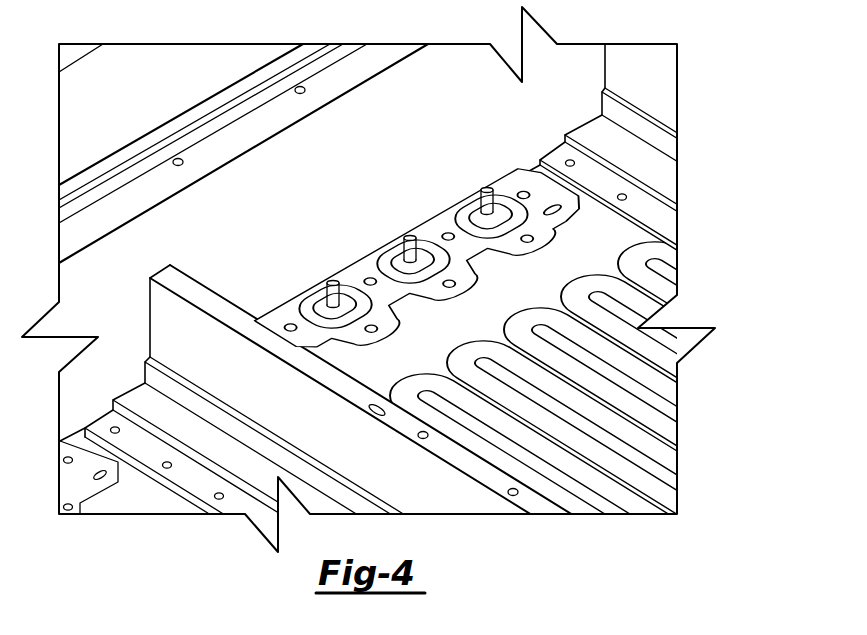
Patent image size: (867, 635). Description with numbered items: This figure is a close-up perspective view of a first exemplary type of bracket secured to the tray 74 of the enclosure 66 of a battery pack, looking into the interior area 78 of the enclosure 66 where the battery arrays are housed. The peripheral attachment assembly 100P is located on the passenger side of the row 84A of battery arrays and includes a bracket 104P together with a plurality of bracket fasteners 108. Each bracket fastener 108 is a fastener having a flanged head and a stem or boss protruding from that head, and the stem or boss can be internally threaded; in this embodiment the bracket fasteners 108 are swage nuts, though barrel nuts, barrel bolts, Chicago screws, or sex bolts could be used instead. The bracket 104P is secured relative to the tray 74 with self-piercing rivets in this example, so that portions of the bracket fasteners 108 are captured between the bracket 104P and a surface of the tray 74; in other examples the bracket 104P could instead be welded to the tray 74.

The enclosure 66 is at (157, 503).
The tray 74 is at (622, 242).
The interior area 78 is at (621, 385).
The row 84A is at (634, 432).
The peripheral attachment assembly 100P is at (489, 231).
The bracket 104P is at (429, 240).
The bracket fasteners 108 is at (367, 233).